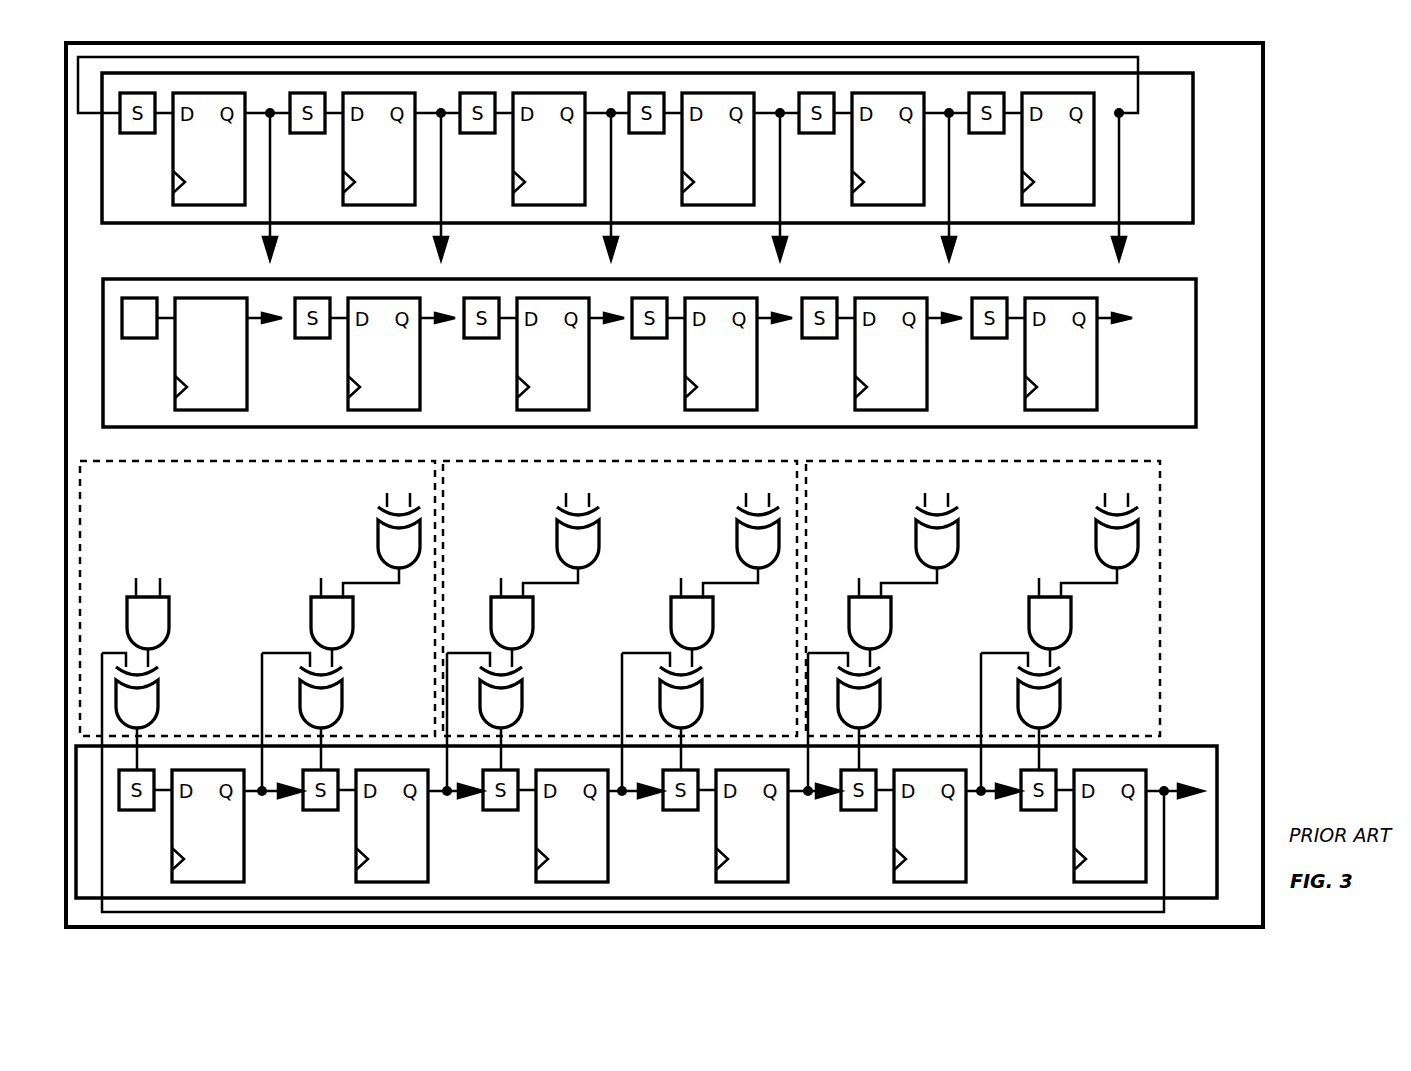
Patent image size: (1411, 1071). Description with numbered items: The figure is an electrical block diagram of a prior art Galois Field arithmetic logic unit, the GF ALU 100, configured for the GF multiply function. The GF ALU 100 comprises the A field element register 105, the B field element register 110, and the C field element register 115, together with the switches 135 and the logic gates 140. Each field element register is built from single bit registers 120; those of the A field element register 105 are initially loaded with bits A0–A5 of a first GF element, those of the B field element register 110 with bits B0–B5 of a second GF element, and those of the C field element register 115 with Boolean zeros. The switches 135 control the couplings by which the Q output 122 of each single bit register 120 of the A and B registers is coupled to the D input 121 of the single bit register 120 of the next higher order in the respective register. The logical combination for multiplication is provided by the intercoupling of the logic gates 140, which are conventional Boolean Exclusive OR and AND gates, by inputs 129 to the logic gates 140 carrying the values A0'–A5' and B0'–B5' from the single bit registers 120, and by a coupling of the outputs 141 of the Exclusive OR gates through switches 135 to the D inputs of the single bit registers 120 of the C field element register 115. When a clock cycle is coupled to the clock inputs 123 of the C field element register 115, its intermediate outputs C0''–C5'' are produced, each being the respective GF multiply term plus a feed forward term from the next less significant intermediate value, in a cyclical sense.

The GF ALU 100 is at (683, 485).
The A field element register 105 is at (653, 158).
The B field element register 110 is at (677, 337).
The C field element register 115 is at (658, 782).
The single bit register 120 is at (211, 328).
The D input 121 is at (158, 283).
The Q output 122 is at (273, 333).
The clock input 123 is at (154, 400).
The input 129 is at (617, 533).
The switch 135 is at (133, 337).
The logic gate 140 is at (620, 611).
The output 141 is at (581, 722).